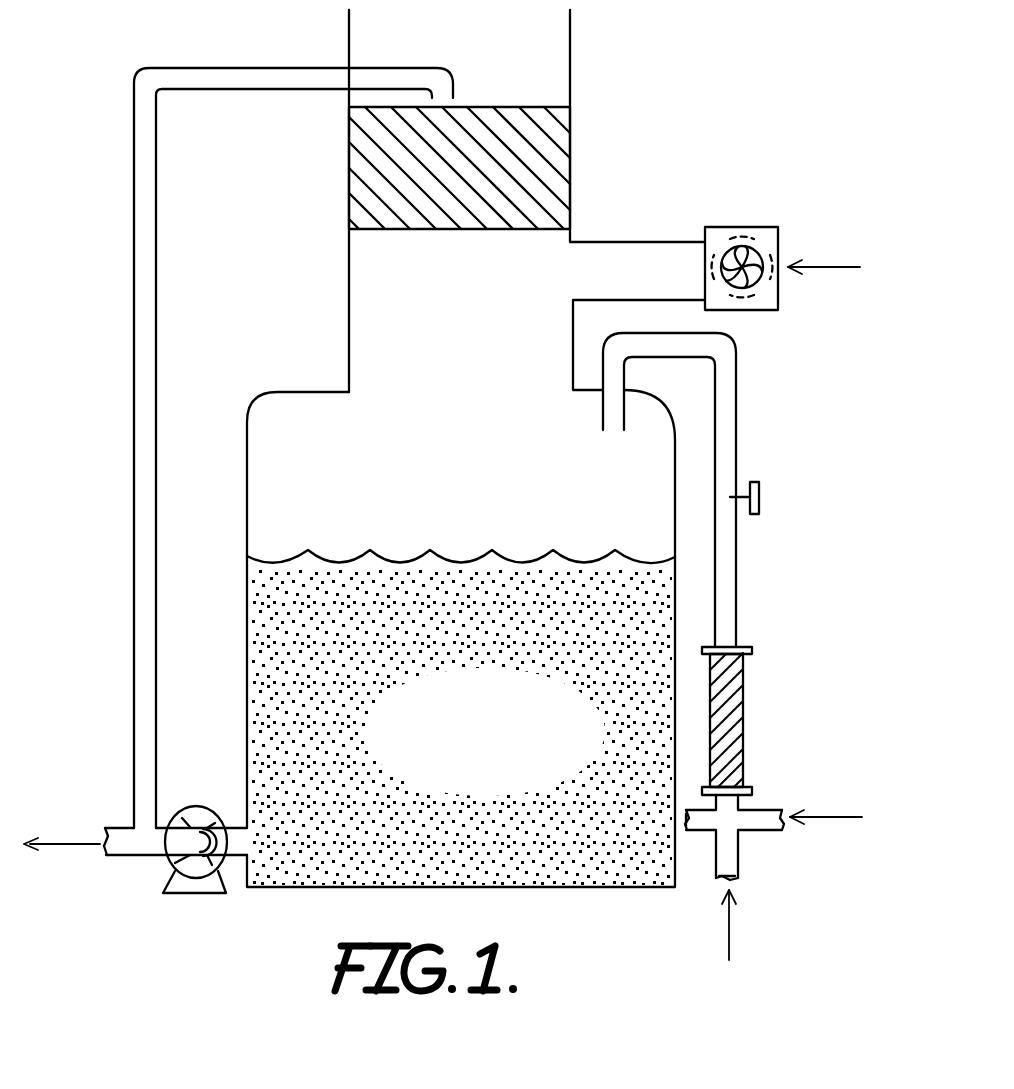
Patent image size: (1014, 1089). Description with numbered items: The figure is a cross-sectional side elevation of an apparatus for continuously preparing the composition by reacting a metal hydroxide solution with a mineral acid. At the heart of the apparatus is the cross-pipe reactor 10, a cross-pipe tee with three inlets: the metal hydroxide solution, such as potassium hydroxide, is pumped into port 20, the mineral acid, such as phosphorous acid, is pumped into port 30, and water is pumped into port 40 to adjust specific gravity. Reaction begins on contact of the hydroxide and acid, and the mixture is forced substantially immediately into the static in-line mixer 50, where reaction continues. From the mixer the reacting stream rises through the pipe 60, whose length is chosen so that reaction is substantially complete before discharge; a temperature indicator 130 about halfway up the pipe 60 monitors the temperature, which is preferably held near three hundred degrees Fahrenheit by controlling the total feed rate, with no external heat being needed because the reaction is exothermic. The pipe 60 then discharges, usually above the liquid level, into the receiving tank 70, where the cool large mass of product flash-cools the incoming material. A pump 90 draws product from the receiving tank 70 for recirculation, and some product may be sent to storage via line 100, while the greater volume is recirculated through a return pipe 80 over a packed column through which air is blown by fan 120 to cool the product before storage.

The cross-pipe reactor 10 is at (785, 868).
The port 20 is at (777, 809).
The port 30 is at (693, 819).
The port 40 is at (722, 879).
The static in-line mixer 50 is at (741, 695).
The pipe 60 is at (734, 401).
The receiving tank 70 is at (310, 402).
The recycle pipe 80 is at (137, 355).
The pump 90 is at (205, 820).
The line 100 is at (520, 107).
The fan 120 is at (765, 182).
The temperature indicator 130 is at (760, 500).